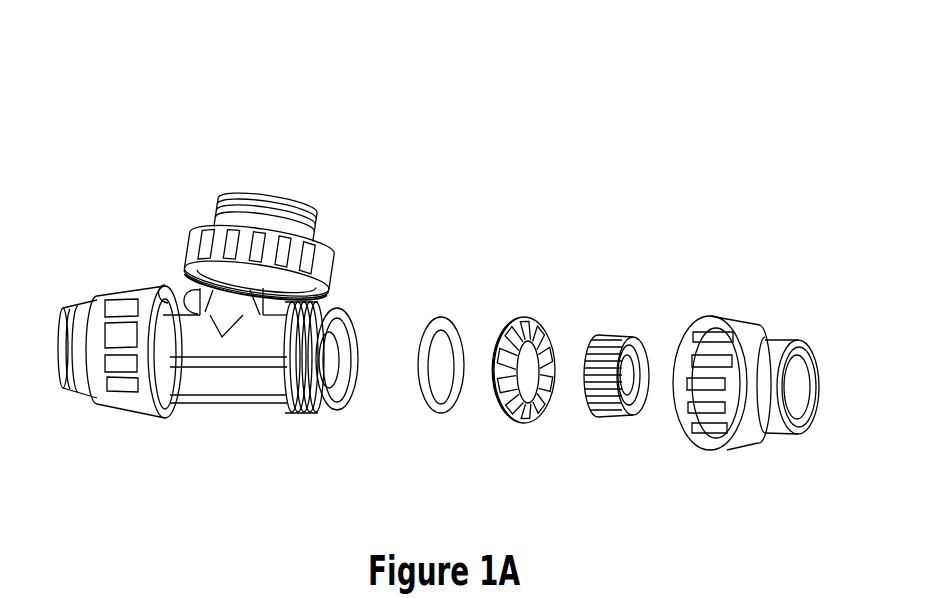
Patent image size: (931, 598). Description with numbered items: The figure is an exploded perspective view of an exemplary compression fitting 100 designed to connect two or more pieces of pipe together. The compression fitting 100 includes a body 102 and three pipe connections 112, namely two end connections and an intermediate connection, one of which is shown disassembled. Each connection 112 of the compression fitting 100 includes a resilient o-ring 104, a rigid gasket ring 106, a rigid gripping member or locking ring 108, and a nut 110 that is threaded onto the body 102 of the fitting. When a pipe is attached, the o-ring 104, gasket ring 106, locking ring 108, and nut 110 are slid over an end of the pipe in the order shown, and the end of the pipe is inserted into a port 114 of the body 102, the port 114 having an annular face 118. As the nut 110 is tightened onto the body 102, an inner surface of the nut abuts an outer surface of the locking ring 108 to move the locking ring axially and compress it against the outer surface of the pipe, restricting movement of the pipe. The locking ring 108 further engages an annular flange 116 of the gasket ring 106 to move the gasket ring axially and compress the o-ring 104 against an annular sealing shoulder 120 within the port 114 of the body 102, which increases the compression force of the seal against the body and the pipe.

The compression fitting 100 is at (772, 145).
The body 102 is at (237, 412).
The o-ring 104 is at (455, 300).
The gasket ring 106 is at (533, 300).
The locking ring 108 is at (643, 308).
The nut 110 is at (770, 282).
The pipe connection 112 is at (197, 222).
The port 114 is at (347, 308).
The annular flange 116 is at (530, 422).
The annular face 118 is at (348, 405).
The annular sealing shoulder 120 is at (342, 375).